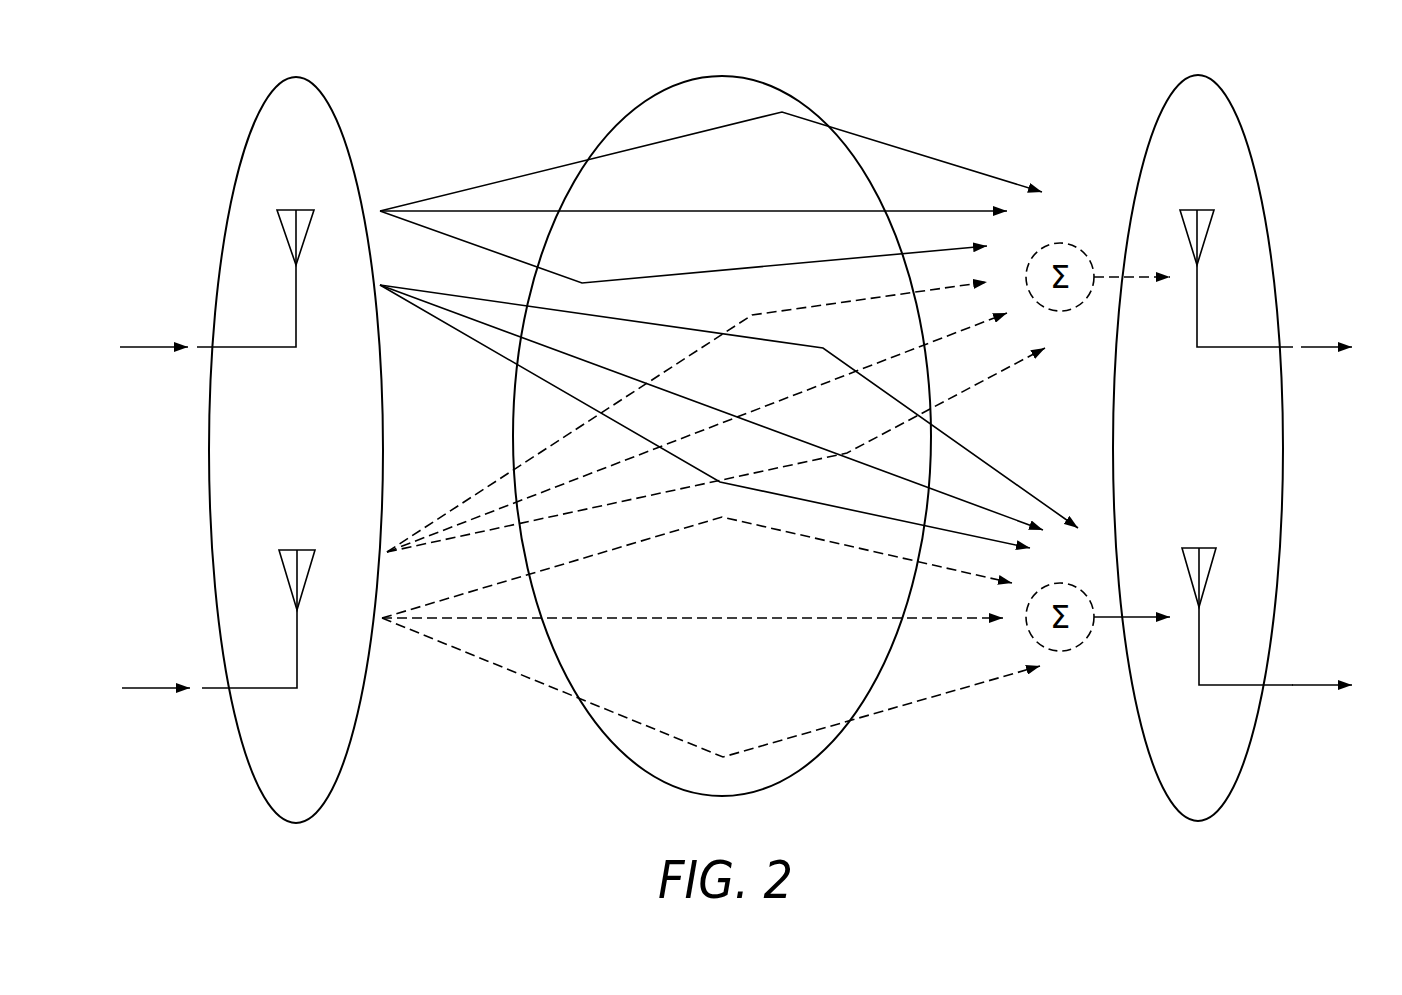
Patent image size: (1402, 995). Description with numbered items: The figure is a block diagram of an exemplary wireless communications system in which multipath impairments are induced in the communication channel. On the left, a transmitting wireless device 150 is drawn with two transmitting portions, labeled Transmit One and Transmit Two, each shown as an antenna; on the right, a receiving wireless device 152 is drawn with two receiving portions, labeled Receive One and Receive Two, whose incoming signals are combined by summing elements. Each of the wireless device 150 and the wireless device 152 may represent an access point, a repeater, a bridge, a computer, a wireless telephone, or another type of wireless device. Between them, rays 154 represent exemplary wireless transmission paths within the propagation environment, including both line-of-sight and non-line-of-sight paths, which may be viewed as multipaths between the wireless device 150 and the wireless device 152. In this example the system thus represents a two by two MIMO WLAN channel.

The wireless device 150 is at (296, 77).
The rays 154 is at (723, 75).
The wireless device 152 is at (1197, 75).